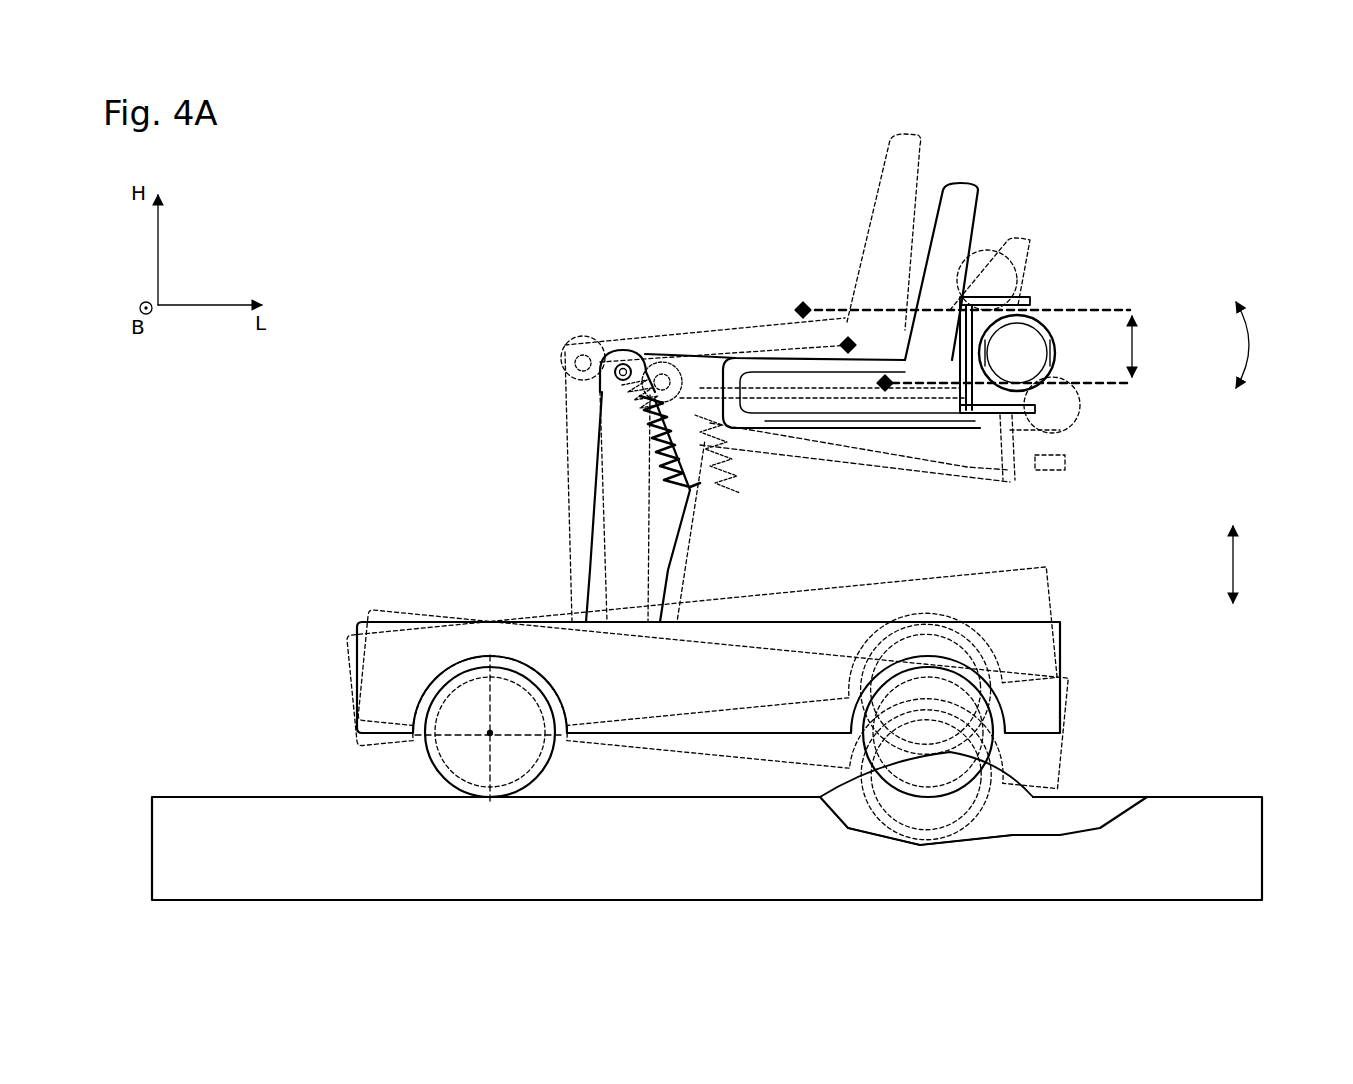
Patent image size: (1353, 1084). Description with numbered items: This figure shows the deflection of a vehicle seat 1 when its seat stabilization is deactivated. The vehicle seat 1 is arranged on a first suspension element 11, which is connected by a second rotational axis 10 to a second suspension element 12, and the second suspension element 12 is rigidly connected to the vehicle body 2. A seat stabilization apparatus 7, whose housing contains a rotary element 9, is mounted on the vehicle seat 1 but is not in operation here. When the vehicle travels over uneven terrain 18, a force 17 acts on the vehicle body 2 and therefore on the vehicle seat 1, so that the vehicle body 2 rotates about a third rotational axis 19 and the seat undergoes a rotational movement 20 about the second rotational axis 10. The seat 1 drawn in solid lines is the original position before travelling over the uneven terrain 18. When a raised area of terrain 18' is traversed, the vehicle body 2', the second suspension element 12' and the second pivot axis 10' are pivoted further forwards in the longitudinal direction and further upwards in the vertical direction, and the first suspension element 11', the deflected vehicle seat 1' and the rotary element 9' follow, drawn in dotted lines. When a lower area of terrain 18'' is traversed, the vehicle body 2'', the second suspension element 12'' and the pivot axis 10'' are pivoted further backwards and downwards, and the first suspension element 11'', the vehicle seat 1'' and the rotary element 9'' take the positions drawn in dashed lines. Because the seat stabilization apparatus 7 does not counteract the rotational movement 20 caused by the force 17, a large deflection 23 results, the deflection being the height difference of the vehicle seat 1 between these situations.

The vehicle seat 1 is at (841, 272).
The deflected vehicle seat 1' is at (845, 257).
The deflected vehicle seat 1'' is at (905, 356).
The vehicle body 2 is at (726, 713).
The vehicle body 2' is at (721, 685).
The vehicle body 2'' is at (735, 731).
The seat stabilization apparatus 7 is at (1094, 508).
The rotary element 9 is at (1015, 350).
The rotary element 9' is at (989, 248).
The rotary element 9'' is at (1079, 439).
The second rotational axis 10 is at (627, 338).
The second pivot axis 10' is at (533, 345).
The pivot axis 10'' is at (662, 351).
The first suspension element 11 is at (694, 378).
The first suspension element 11' is at (672, 331).
The first suspension element 11'' is at (736, 460).
The second suspension element 12 is at (592, 507).
The second suspension element 12' is at (541, 487).
The second suspension element 12'' is at (725, 508).
The force 17 is at (1236, 568).
The uneven terrain 18 is at (707, 813).
The raised area of terrain 18' is at (962, 774).
The lower area of terrain 18'' is at (946, 882).
The third rotational axis 19 is at (490, 725).
The rotational movement 20 is at (1262, 347).
The deflection 23 is at (1134, 348).